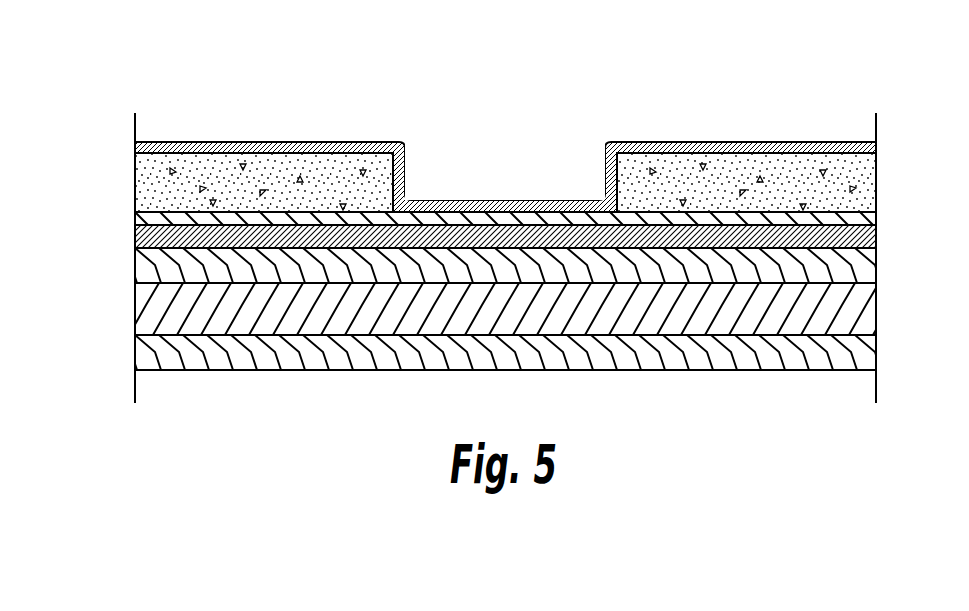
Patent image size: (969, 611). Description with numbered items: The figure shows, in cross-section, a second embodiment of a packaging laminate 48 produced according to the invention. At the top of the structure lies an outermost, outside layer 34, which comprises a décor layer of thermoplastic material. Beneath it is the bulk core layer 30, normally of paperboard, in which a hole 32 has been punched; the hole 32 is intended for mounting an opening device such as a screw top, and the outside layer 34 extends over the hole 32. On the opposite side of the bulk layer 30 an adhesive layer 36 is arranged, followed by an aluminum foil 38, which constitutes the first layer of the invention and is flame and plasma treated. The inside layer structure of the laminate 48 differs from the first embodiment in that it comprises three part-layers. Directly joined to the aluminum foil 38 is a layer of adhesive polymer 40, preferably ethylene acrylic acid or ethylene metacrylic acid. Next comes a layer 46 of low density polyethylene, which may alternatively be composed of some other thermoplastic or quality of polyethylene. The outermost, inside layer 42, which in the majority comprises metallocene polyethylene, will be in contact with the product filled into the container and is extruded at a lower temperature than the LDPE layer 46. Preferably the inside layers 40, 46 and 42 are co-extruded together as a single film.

The packaging laminate 48 is at (238, 124).
The outermost outside layer 34 is at (143, 148).
The bulk core layer 30 is at (143, 181).
The hole 32 is at (490, 187).
The adhesive layer 36 is at (143, 219).
The aluminum foil 38 is at (143, 238).
The adhesive polymer layer 40 is at (143, 268).
The LDPE layer 46 is at (143, 310).
The m-PE layer 42 is at (143, 355).